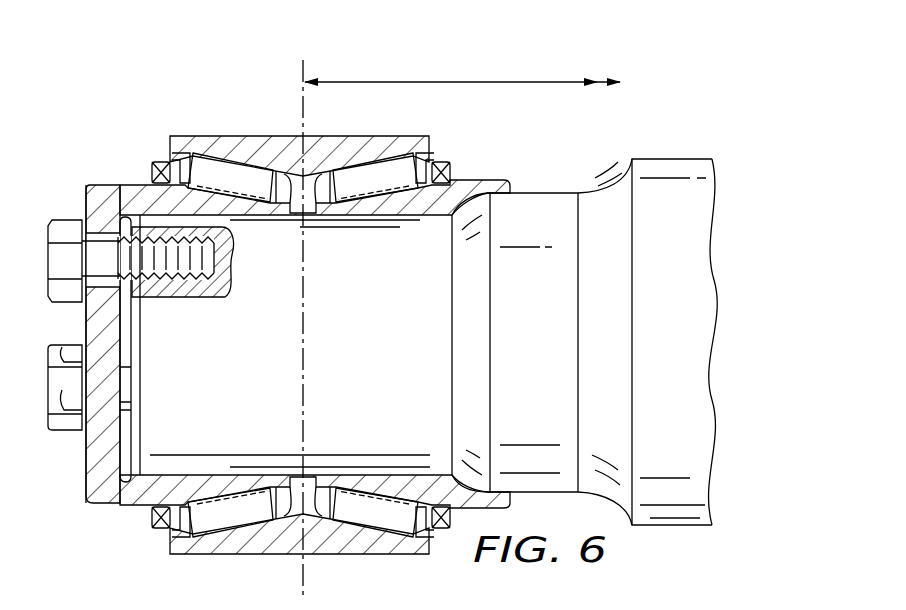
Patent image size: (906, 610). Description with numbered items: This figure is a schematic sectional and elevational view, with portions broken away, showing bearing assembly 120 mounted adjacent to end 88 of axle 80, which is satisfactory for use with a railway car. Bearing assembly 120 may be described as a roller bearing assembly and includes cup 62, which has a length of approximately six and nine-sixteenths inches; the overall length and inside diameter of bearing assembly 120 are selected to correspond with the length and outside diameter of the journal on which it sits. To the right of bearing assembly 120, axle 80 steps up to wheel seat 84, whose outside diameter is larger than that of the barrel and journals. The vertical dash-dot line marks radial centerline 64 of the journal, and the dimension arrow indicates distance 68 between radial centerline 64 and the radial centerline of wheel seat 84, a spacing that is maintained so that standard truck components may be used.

The bearing assembly 120 is at (118, 156).
The cup 62 is at (238, 136).
The radial centerline 64 is at (298, 574).
The distance 68 is at (462, 80).
The axle 80 is at (672, 154).
The wheel seat 84 is at (674, 524).
The end 88 is at (124, 336).